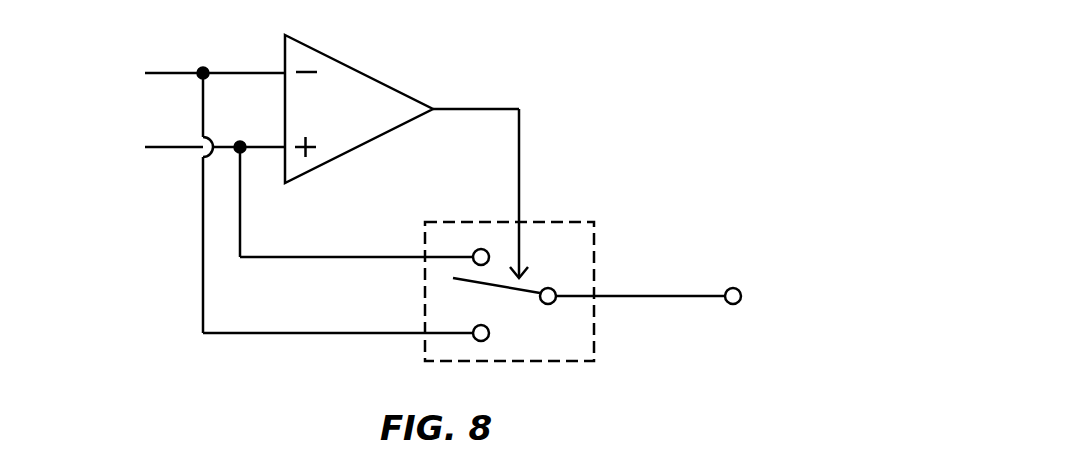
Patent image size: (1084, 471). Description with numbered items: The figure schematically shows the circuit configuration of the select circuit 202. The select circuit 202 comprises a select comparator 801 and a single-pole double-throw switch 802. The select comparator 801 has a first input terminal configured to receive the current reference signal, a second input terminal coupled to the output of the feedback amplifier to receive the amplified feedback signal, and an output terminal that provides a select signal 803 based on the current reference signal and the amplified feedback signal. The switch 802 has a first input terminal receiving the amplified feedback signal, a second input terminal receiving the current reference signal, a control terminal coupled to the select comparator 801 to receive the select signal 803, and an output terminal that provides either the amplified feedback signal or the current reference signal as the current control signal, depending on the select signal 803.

The select circuit 202 is at (727, 73).
The select comparator 801 is at (367, 75).
The SPDT switch 802 is at (555, 220).
The select signal 803 is at (480, 179).